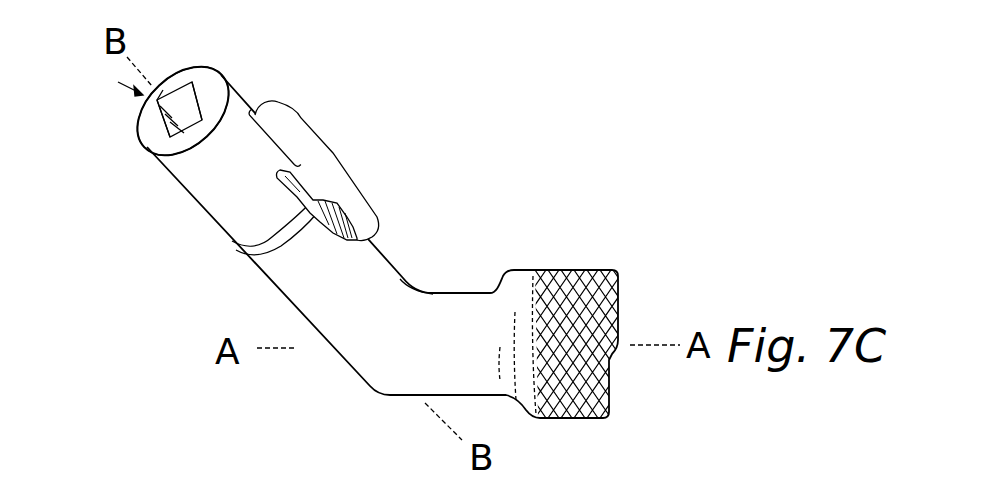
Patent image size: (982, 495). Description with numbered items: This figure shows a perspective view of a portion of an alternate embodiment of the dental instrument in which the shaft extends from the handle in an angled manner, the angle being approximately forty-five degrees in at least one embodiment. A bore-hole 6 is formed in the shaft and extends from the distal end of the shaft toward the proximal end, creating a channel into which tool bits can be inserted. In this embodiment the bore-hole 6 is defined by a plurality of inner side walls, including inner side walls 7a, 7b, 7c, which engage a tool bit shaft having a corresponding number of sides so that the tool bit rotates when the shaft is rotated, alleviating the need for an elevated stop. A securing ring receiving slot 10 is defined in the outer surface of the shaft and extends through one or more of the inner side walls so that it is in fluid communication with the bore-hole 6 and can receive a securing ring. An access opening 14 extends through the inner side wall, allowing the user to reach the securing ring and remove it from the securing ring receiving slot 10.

The bore-hole 6 is at (140, 93).
The inner side wall 7a is at (187, 82).
The inner side wall 7b is at (200, 102).
The inner side wall 7c is at (167, 152).
The securing ring receiving slot 10 is at (250, 250).
The access opening 14 is at (335, 155).